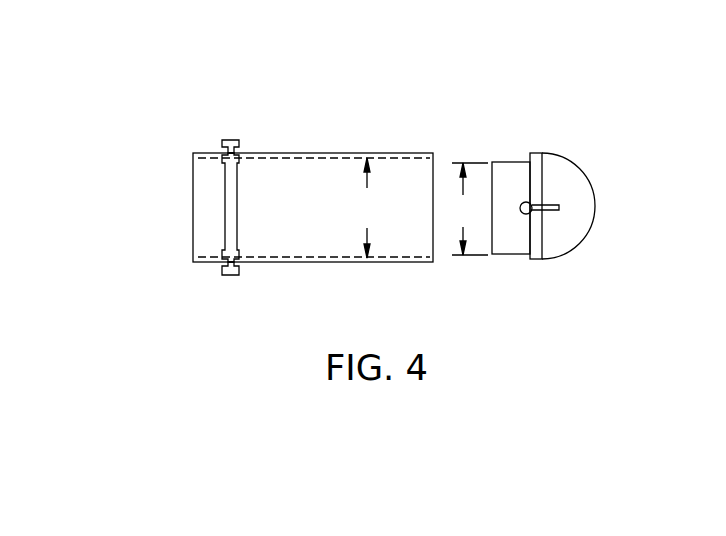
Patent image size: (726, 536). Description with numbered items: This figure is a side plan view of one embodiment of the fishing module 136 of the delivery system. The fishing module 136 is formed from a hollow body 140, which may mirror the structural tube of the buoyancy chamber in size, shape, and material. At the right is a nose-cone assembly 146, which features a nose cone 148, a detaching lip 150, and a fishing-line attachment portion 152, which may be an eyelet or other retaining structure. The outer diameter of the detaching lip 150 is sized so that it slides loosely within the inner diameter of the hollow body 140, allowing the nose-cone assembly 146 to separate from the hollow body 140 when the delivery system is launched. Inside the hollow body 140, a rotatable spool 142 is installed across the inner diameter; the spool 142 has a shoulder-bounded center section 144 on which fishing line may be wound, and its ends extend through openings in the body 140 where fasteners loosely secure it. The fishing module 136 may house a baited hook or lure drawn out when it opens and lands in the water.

The fishing module 136 is at (327, 123).
The hollow body 140 is at (296, 262).
The rotatable spool 142 is at (240, 139).
The shoulder-bounded center section 144 is at (228, 208).
The nose-cone assembly 146 is at (607, 188).
The nose cone 148 is at (570, 153).
The detaching lip 150 is at (515, 235).
The fishing-line attachment portion 152 is at (555, 215).